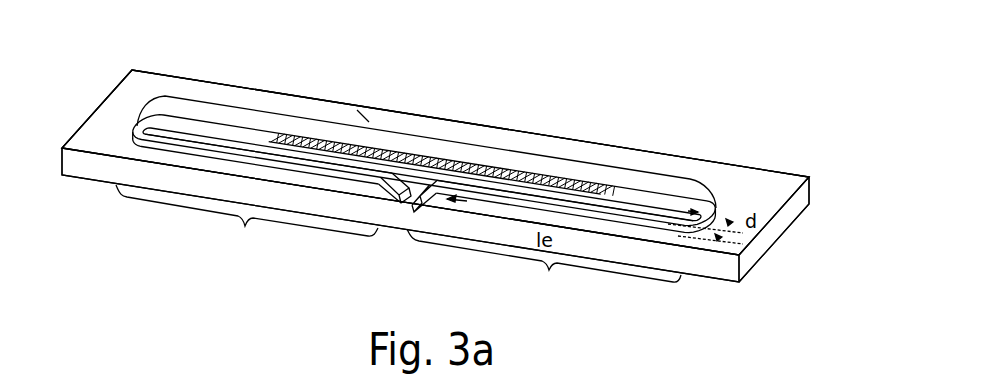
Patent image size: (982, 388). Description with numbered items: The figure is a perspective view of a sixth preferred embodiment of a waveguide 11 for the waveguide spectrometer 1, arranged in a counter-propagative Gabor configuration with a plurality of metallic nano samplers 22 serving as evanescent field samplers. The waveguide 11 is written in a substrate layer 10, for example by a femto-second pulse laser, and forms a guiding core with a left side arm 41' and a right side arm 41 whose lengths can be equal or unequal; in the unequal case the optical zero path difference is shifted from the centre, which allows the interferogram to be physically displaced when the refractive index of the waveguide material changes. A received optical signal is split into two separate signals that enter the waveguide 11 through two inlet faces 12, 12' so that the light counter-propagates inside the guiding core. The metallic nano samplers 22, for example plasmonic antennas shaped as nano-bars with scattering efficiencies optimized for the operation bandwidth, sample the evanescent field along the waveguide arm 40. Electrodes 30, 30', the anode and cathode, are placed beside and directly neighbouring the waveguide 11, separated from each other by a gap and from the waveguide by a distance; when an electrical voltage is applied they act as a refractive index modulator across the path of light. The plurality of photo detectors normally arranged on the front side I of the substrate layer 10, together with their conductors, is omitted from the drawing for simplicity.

The waveguide spectrometer 1 is at (283, 78).
The substrate layer 10 is at (720, 265).
The waveguide 11 is at (133, 118).
The inlet face 12 is at (365, 225).
The inlet face 12' is at (400, 235).
The metallic nano sampler 22 is at (487, 167).
The electrode 30 is at (424, 215).
The electrode 30' is at (439, 164).
The waveguide arm 40 is at (478, 144).
The arm 41 is at (544, 264).
The arm 41' is at (247, 219).
The front side I is at (363, 117).